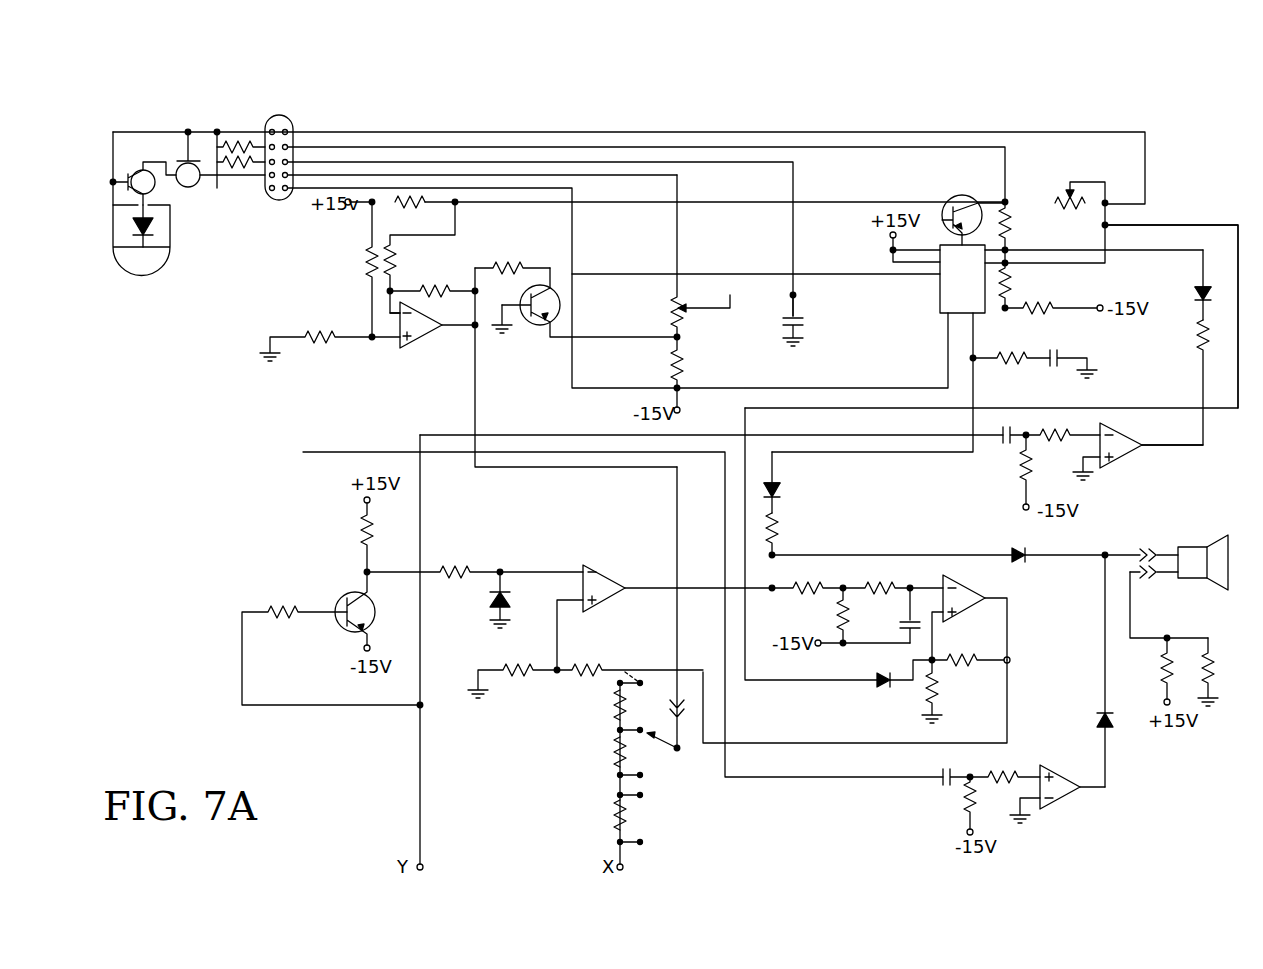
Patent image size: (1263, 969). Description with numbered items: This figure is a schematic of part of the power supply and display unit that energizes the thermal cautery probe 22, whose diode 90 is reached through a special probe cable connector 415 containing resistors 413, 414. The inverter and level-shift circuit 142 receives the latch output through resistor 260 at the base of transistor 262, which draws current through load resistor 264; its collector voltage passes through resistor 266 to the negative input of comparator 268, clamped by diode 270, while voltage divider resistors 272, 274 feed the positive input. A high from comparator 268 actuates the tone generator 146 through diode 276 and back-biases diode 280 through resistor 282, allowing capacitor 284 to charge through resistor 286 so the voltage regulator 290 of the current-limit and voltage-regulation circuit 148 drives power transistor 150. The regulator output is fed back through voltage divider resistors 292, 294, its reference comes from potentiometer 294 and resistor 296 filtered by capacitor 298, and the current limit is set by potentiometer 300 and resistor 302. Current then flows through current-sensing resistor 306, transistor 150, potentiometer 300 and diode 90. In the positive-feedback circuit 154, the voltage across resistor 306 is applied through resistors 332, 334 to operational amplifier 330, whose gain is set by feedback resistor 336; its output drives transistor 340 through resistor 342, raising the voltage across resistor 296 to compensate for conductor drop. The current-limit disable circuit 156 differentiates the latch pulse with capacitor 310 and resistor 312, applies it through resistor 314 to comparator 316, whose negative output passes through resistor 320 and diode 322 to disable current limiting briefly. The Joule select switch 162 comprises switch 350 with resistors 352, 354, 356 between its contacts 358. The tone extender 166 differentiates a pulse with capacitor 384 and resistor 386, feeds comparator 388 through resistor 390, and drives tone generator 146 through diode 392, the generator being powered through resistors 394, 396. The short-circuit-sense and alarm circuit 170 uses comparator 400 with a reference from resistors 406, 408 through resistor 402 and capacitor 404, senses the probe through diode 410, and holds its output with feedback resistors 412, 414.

The thermal cautery probe 22 is at (105, 178).
The diode 90 is at (128, 234).
The resistor 413 is at (224, 152).
The resistor 414 is at (236, 167).
The probe cable connector 415 is at (279, 201).
The current-sensing resistor 306 is at (407, 208).
The resistor 332 is at (370, 255).
The summing junction resistor 334 is at (398, 268).
The feedback resistor 336 is at (437, 289).
The resistor 342 is at (512, 265).
The transistor 340 is at (553, 288).
The operational amplifier 330 is at (422, 346).
The positive-feedback circuit 154 is at (535, 340).
The power transistor 150 is at (352, 272).
The potentiometer 294 is at (670, 300).
The voltage divider resistor 296 is at (670, 363).
The capacitor 298 is at (805, 318).
The voltage regulator 290 is at (938, 306).
The resistor 302 is at (1012, 228).
The potentiometer 300 is at (1067, 193).
The current-limit and voltage-regulation circuit 148 is at (1135, 238).
The voltage divider resistor 292 is at (1032, 279).
The diode 322 is at (1195, 288).
The resistor 320 is at (1197, 336).
The resistor 286 is at (1012, 355).
The capacitor 284 is at (1055, 352).
The comparator 316 is at (1135, 436).
The current-limit disable circuit 156 is at (1135, 460).
The capacitor 310 is at (1003, 445).
The resistor 312 is at (996, 472).
The resistor 314 is at (1062, 446).
The diode 276 is at (1018, 545).
The tone generator 146 is at (1187, 547).
The diode 280 is at (782, 490).
The resistor 282 is at (782, 527).
The voltage divider resistor 406 is at (812, 588).
The resistor 402 is at (885, 588).
The comparator 400 is at (958, 584).
The short-circuit-sense and alarm circuit 170 is at (1020, 614).
The voltage divider resistor 408 is at (838, 625).
The capacitor 404 is at (905, 623).
The diode 410 is at (876, 688).
The voltage divider resistor 412 is at (962, 665).
The voltage divider resistor 394 is at (1162, 675).
The voltage divider resistor 396 is at (1212, 667).
The diode 392 is at (1113, 722).
The resistor 390 is at (1003, 772).
The comparator 388 is at (1060, 781).
The tone extender 166 is at (1108, 802).
The capacitor 384 is at (940, 784).
The resistor 386 is at (965, 805).
The inverter and level-shift circuit 142 is at (591, 551).
The comparator 268 is at (608, 568).
The resistor 266 is at (458, 568).
The diode 270 is at (490, 602).
The load resistor 264 is at (360, 530).
The transistor 262 is at (373, 611).
The resistor 260 is at (283, 605).
The voltage divider resistor 274 is at (520, 668).
The voltage divider resistor 272 is at (592, 668).
The contacts 358 is at (650, 696).
The resistor 352 is at (612, 707).
The resistor 354 is at (612, 752).
The resistor 356 is at (612, 815).
The single-pole, five-contact switch 350 is at (678, 751).
The Joule select switch 162 is at (655, 820).